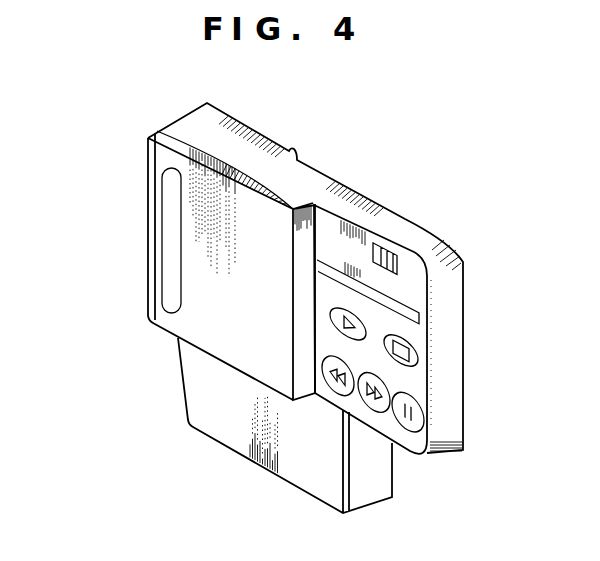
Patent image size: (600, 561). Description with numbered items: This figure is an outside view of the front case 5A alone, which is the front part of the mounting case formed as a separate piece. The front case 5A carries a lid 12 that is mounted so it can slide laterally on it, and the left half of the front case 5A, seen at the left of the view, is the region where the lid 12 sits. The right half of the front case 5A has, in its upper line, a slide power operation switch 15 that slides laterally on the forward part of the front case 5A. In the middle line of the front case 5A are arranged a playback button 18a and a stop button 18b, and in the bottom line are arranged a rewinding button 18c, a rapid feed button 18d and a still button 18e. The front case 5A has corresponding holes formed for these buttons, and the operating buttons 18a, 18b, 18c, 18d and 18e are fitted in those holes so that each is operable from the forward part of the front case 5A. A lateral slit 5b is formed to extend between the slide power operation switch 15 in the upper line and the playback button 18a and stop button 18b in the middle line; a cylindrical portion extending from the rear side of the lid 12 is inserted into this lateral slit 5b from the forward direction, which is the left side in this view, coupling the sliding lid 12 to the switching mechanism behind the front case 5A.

The front case 5A is at (150, 203).
The lid 12 is at (205, 287).
The slide power operation switch 15 is at (382, 241).
The lateral slit 5b is at (405, 310).
The playback button 18a is at (330, 320).
The stop button 18b is at (420, 350).
The rewinding button 18c is at (325, 378).
The rapid feed button 18d is at (362, 428).
The still button 18e is at (420, 417).